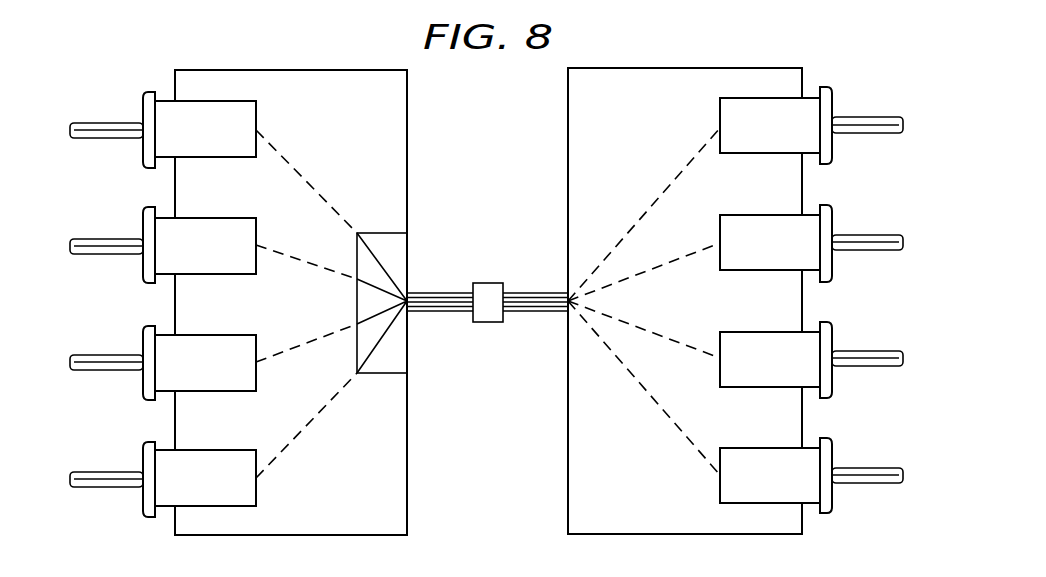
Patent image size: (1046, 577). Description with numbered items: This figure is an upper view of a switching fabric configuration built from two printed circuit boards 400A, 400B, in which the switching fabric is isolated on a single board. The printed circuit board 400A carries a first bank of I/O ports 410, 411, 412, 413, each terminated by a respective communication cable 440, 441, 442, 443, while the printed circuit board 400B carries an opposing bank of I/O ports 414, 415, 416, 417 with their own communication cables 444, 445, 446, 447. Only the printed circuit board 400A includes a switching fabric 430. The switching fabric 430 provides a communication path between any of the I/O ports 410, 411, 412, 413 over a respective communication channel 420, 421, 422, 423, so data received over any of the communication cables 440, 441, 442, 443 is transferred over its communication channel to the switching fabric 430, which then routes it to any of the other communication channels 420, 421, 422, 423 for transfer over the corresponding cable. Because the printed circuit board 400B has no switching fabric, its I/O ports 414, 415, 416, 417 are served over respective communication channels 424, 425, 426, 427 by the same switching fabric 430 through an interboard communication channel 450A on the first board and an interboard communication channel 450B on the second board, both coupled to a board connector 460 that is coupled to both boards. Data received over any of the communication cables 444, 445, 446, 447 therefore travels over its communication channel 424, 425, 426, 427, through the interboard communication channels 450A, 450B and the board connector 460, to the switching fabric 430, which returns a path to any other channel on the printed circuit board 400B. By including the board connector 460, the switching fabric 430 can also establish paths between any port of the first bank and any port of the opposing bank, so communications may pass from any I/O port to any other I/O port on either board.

The printed circuit board 400A is at (280, 68).
The printed circuit board 400B is at (693, 67).
The I/O port 410 is at (167, 105).
The I/O port 411 is at (217, 215).
The I/O port 412 is at (218, 391).
The I/O port 413 is at (168, 506).
The I/O port 414 is at (807, 100).
The I/O port 415 is at (760, 215).
The I/O port 416 is at (760, 386).
The I/O port 417 is at (810, 501).
The communication channel 420 is at (317, 187).
The communication channel 421 is at (300, 260).
The communication channel 422 is at (300, 346).
The communication channel 423 is at (315, 422).
The communication channel 424 is at (664, 186).
The communication channel 425 is at (677, 258).
The communication channel 426 is at (678, 344).
The communication channel 427 is at (667, 416).
The switching fabric 430 is at (357, 305).
The communication cable 440 is at (105, 127).
The communication cable 441 is at (105, 243).
The communication cable 442 is at (105, 371).
The communication cable 443 is at (105, 488).
The communication cable 444 is at (870, 121).
The communication cable 445 is at (870, 239).
The communication cable 446 is at (870, 365).
The communication cable 447 is at (872, 482).
The interboard communication channel 450A is at (445, 288).
The interboard communication channel 450B is at (528, 320).
The board connector 460 is at (487, 288).